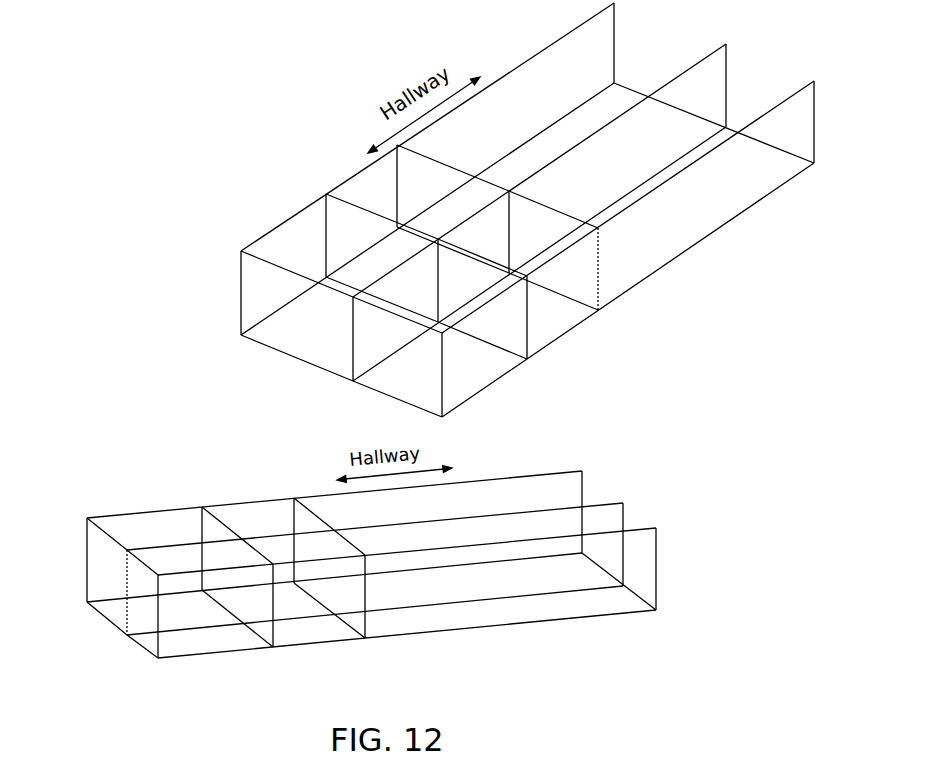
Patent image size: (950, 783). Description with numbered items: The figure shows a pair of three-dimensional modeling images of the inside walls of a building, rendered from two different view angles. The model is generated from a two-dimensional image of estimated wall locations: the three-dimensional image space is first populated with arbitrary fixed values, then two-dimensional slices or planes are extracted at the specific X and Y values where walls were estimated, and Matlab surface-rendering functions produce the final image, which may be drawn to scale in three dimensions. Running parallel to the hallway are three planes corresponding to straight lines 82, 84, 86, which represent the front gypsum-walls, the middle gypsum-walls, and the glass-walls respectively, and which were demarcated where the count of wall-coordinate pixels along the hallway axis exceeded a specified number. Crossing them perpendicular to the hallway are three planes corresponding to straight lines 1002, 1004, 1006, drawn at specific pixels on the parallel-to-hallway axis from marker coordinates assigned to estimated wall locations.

The straight line 82 is at (614, 37).
The straight line 84 is at (726, 70).
The straight line 86 is at (814, 122).
The straight line 1002 is at (397, 145).
The straight line 1004 is at (326, 194).
The straight line 1006 is at (241, 251).